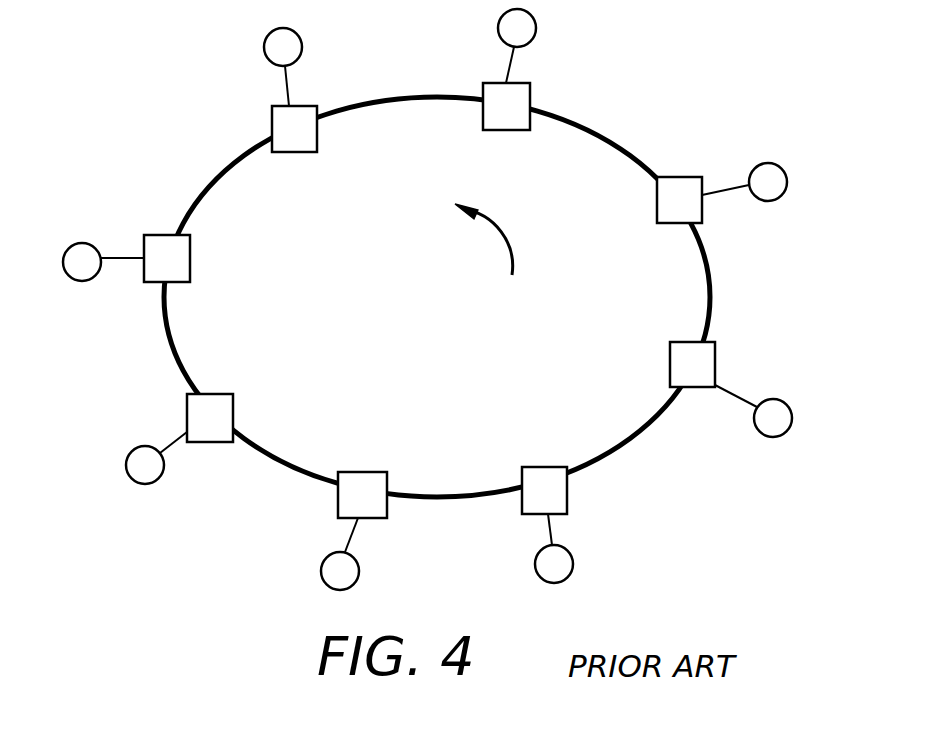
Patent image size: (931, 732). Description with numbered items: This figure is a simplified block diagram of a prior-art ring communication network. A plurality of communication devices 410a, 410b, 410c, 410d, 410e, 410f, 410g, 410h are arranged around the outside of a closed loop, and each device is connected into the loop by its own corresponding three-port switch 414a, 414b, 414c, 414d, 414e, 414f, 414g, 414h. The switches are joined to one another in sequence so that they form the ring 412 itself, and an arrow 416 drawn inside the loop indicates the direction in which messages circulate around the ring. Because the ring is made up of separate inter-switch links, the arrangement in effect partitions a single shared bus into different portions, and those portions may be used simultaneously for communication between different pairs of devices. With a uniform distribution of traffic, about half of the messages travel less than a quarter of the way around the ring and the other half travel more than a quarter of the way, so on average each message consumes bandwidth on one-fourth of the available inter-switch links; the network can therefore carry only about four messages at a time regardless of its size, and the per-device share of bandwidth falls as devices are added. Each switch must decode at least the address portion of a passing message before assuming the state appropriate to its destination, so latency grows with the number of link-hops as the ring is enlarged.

The communication device 410a is at (573, 564).
The communication device 410b is at (767, 437).
The communication device 410c is at (762, 163).
The communication device 410d is at (533, 38).
The communication device 410e is at (264, 50).
The communication device 410f is at (84, 281).
The communication device 410g is at (129, 456).
The communication device 410h is at (321, 568).
The 3-port switch 414a is at (540, 468).
The 3-port switch 414b is at (670, 372).
The 3-port switch 414c is at (659, 225).
The 3-port switch 414d is at (505, 130).
The 3-port switch 414e is at (297, 152).
The 3-port switch 414f is at (190, 258).
The 3-port switch 414g is at (233, 406).
The 3-port switch 414h is at (378, 472).
The direction of token flow 416 is at (508, 258).
The token ring 412 is at (437, 297).